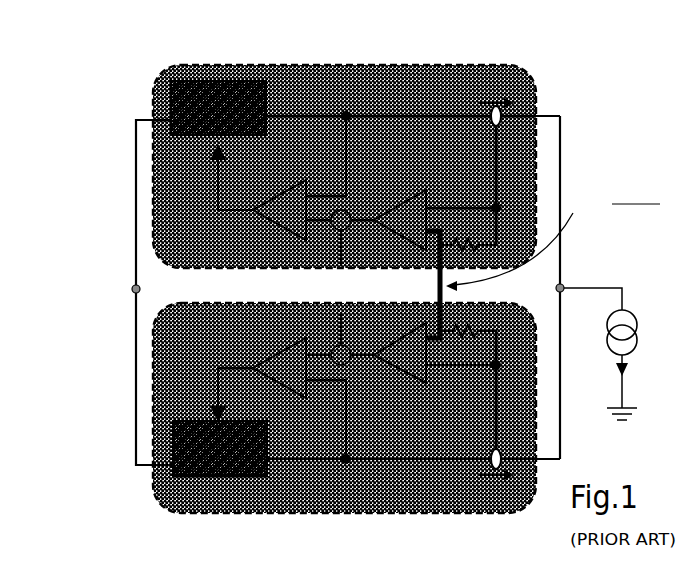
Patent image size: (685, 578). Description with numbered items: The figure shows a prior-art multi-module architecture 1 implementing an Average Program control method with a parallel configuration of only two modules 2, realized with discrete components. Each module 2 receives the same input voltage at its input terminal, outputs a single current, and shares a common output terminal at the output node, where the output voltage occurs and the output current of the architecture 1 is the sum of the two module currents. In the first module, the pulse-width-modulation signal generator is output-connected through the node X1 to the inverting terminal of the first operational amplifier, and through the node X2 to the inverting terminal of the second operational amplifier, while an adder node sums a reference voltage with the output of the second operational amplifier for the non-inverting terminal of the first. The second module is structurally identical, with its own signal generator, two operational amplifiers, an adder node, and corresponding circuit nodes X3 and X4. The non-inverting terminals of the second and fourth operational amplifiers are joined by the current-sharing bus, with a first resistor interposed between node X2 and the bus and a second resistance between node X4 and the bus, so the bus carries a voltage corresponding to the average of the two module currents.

The multi-module architecture 1 is at (118, 74).
The module 2 is at (450, 67).
The node X1 is at (334, 113).
The node X2 is at (486, 197).
The node X3 is at (339, 447).
The node X4 is at (486, 362).